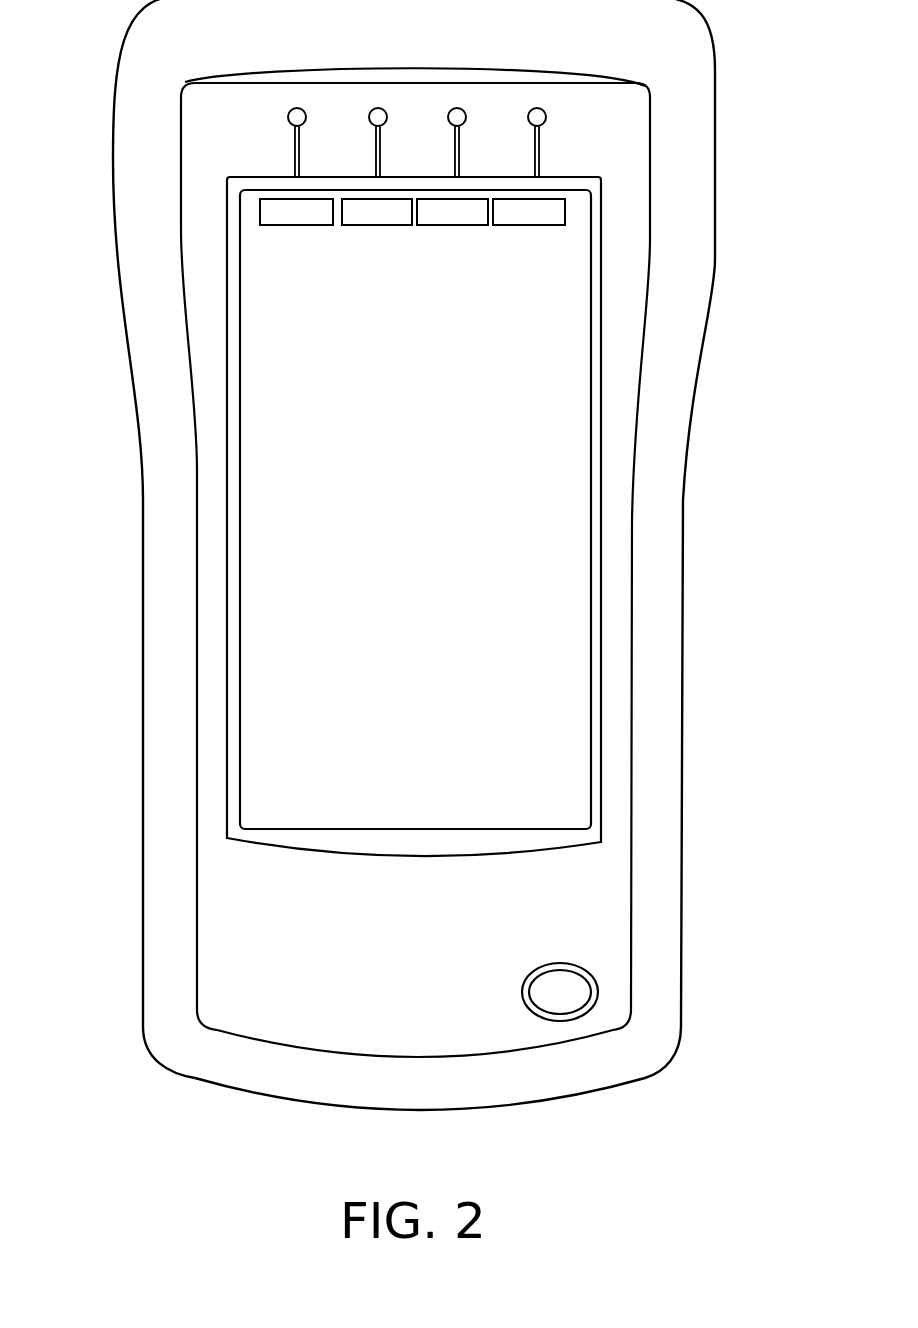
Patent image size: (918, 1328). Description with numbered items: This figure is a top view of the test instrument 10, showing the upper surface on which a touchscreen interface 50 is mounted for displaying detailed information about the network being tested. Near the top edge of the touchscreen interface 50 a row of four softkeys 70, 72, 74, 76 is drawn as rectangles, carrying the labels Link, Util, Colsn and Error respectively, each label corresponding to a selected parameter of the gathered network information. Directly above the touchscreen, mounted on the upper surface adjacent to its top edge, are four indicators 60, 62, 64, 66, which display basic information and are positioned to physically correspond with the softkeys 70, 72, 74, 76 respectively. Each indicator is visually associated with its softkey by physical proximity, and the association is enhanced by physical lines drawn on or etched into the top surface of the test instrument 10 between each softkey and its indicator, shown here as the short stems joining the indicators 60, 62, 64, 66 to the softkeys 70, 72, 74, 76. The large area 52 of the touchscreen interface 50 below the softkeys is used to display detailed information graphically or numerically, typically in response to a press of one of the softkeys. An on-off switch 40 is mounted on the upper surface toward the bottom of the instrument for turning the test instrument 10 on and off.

The test instrument 10 is at (697, 362).
The on-off switch 40 is at (595, 977).
The touchscreen interface 50 is at (591, 470).
The area 52 is at (443, 480).
The indicator 60 is at (298, 108).
The indicator 62 is at (380, 108).
The indicator 64 is at (460, 108).
The indicator 66 is at (540, 108).
The softkey 70 is at (305, 200).
The softkey 72 is at (388, 200).
The softkey 74 is at (462, 200).
The softkey 76 is at (545, 200).